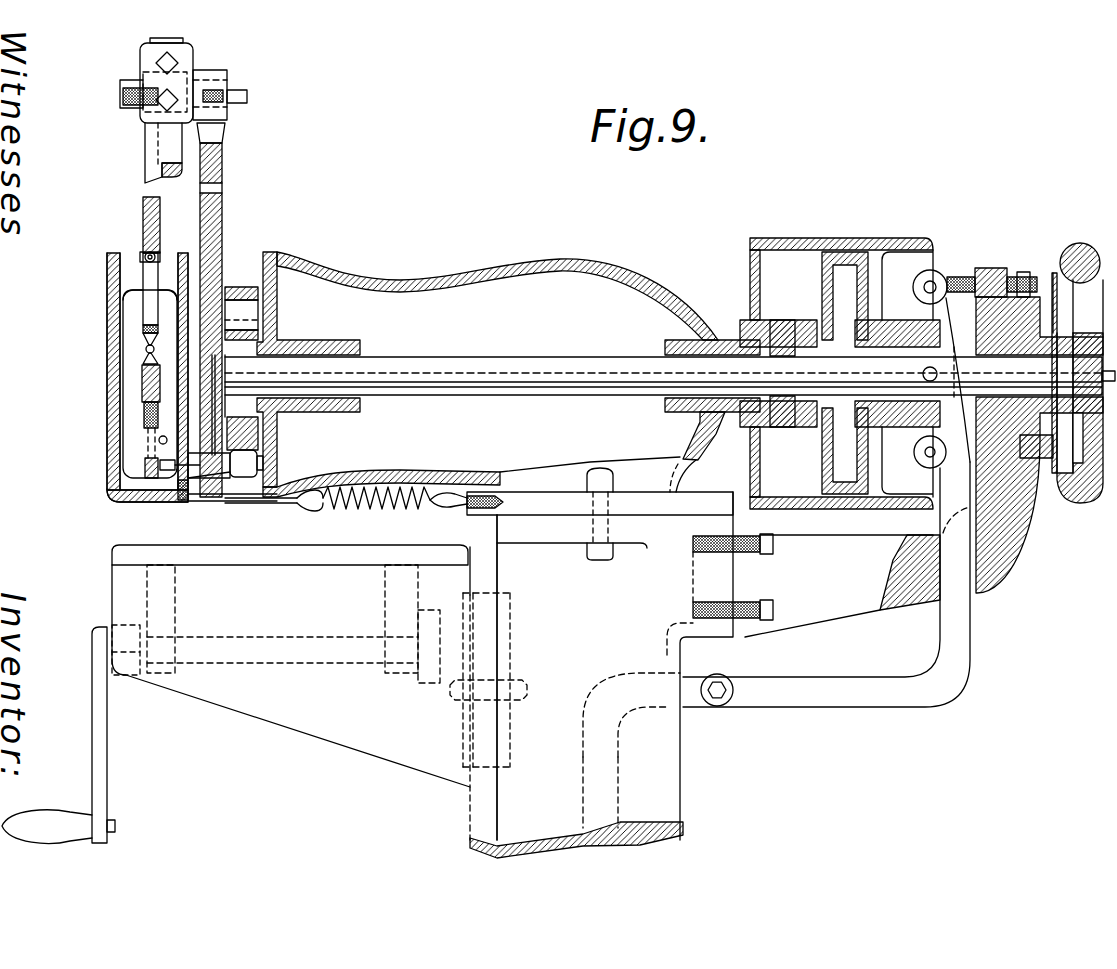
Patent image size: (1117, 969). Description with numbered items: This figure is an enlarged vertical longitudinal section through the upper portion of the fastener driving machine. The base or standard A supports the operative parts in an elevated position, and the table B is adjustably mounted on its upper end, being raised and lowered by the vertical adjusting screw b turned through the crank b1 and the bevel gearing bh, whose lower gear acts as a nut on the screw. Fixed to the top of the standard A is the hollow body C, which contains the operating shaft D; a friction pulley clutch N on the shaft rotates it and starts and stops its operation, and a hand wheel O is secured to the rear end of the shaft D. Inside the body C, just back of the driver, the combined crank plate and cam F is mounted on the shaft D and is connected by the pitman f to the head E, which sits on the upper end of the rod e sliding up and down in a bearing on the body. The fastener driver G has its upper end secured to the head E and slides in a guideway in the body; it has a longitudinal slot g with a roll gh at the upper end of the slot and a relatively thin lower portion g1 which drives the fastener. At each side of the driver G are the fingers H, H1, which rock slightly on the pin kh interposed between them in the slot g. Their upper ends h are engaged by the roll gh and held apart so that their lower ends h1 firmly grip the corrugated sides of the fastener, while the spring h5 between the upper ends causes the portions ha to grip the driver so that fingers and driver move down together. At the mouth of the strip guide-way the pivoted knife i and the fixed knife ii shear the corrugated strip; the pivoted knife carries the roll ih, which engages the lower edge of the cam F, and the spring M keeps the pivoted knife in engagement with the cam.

The head E is at (183, 58).
The rod e is at (172, 150).
The pitman f is at (224, 192).
The fastener driver G is at (142, 203).
The roll gh is at (143, 252).
The longitudinal slot g is at (130, 272).
The upper ends of fingers h is at (175, 297).
The finger H is at (140, 338).
The spring h5 is at (198, 300).
The pin kh is at (147, 364).
The finger H1 is at (167, 383).
The lower portion of driver g1 is at (133, 443).
The gripping portions of fingers ha is at (145, 473).
The fixed knife ii is at (147, 480).
The lower ends of fingers h1 is at (170, 468).
The pivoted knife i is at (170, 488).
The knife roll ih is at (243, 472).
The combined crank plate and cam F is at (262, 350).
The hollow body C is at (408, 268).
The operating shaft D is at (453, 358).
The spring M is at (395, 509).
The base or standard A is at (658, 773).
The table B is at (127, 550).
The crank b1 is at (100, 752).
The bevel gearing bh is at (447, 690).
The vertical adjusting screw b is at (483, 810).
The friction pulley clutch N is at (840, 238).
The hand wheel O is at (1077, 247).